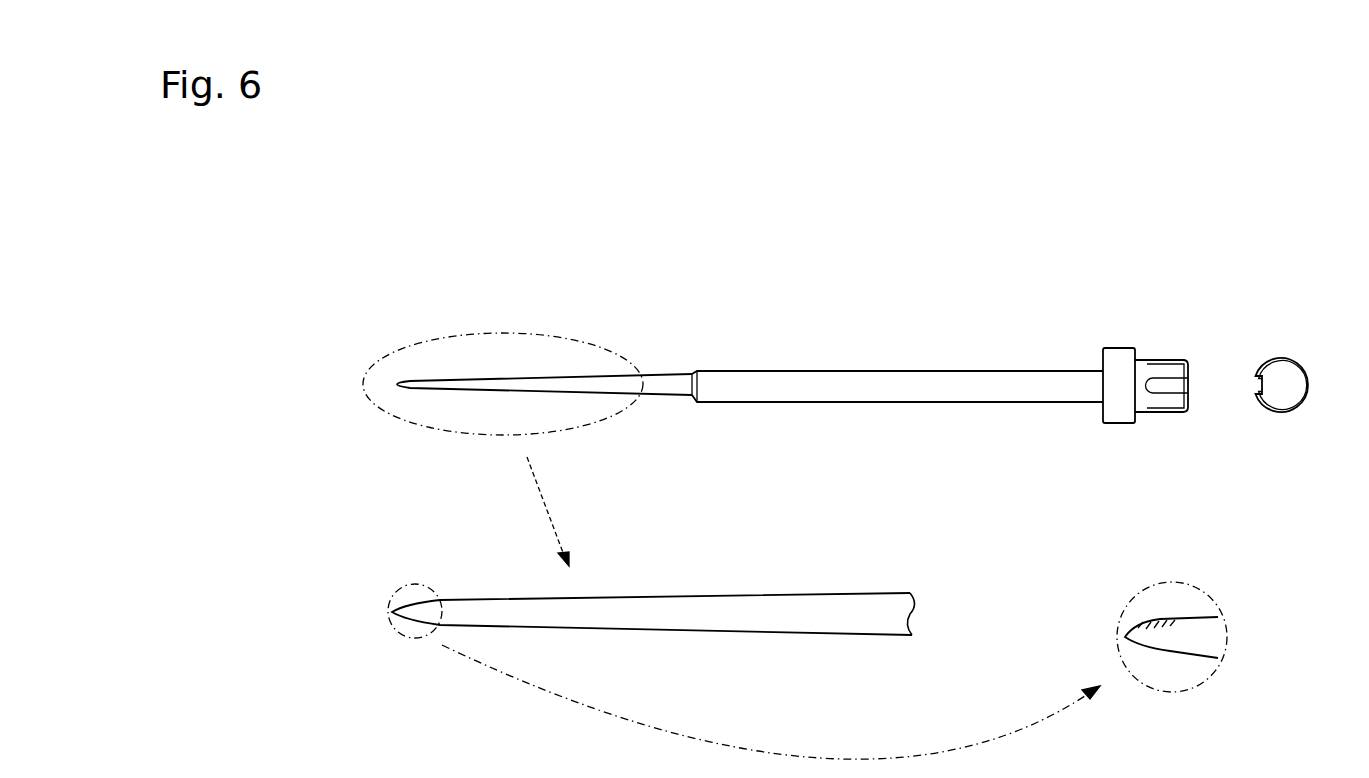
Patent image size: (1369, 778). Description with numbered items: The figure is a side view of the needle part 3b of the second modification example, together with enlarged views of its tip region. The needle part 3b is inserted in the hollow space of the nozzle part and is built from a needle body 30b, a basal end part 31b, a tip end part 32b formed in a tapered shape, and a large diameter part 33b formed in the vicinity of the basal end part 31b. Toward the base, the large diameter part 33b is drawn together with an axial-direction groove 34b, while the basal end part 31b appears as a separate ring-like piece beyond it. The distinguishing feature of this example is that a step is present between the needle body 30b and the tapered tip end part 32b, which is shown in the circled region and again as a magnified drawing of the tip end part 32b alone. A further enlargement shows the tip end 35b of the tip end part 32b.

The needle part 3b is at (839, 326).
The needle body 30b is at (909, 370).
The basal end part of the needle part 31b is at (1190, 373).
The tip end part of the needle part 32b is at (671, 374).
The large diameter part 33b is at (1118, 348).
The axial-direction groove 34b is at (1255, 388).
The tip end of the tip end part 35b is at (410, 606).